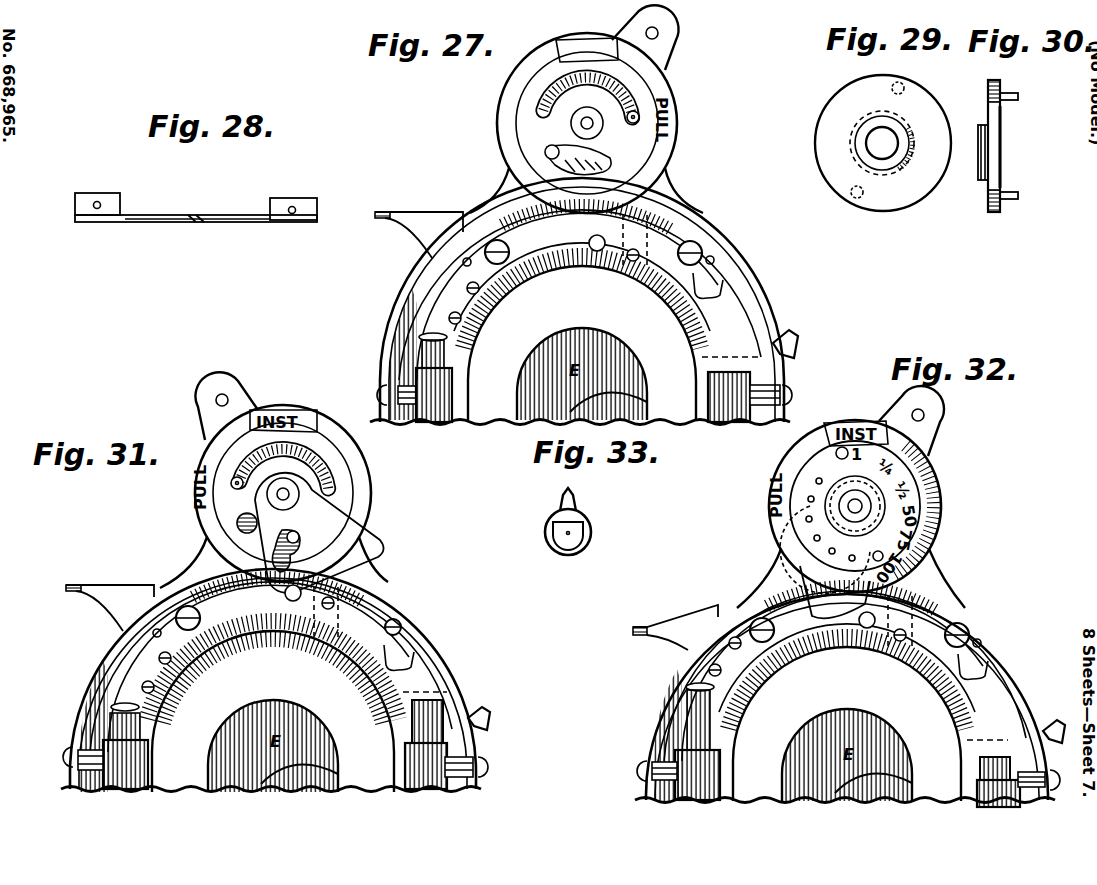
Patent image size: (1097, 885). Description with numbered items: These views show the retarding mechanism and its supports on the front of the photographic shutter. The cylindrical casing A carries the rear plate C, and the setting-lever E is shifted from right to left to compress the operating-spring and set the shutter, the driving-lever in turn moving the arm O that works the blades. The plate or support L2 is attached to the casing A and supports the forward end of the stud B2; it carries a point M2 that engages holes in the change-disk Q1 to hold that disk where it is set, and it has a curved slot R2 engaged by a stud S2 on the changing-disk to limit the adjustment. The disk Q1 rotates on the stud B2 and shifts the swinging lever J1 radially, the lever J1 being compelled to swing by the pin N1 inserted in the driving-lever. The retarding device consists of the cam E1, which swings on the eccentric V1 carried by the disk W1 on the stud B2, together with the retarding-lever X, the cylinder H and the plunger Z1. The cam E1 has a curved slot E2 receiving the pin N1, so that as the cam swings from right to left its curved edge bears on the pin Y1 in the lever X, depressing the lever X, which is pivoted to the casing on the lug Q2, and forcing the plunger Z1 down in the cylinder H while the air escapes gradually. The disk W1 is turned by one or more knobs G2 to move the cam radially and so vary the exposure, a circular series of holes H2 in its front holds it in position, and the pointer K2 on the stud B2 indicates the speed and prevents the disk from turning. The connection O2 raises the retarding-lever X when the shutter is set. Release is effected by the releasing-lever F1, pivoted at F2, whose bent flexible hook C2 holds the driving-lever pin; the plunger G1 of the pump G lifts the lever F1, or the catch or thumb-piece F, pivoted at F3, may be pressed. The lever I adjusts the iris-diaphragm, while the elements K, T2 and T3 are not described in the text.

In FIG. 27, the setting-lever E is at (673, 30).
In FIG. 31, the setting-lever E is at (208, 396).
In FIG. 32, the setting-lever E is at (945, 418).
In FIG. 27, the point M2 is at (557, 43).
In FIG. 28, the point M2 is at (195, 215).
In FIG. 27, the curved slot R2 is at (544, 93).
In FIG. 31, the curved slot R2 is at (240, 467).
In FIG. 27, the stud B2 is at (571, 124).
In FIG. 31, the stud B2 is at (270, 497).
In FIG. 32, the stud B2 is at (840, 500).
In FIG. 27, the disk Q1 is at (670, 117).
In FIG. 31, the disk Q1 is at (353, 443).
In FIG. 32, the disk Q1 is at (941, 486).
In FIG. 27, the stud S2 is at (631, 129).
In FIG. 31, the stud S2 is at (230, 482).
In FIG. 27, the pin N1 is at (548, 152).
In FIG. 31, the pin N1 is at (238, 528).
In FIG. 27, the plate or support L2 is at (586, 190).
In FIG. 28, the plate or support L2 is at (196, 199).
In FIG. 31, the plate or support L2 is at (343, 458).
In FIG. 32, the plate or support L2 is at (945, 575).
In FIG. 27, the catch or thumb-piece F is at (419, 222).
In FIG. 31, the catch or thumb-piece F is at (110, 596).
In FIG. 32, the catch or thumb-piece F is at (675, 621).
In FIG. 27, the lug Q2 is at (468, 197).
In FIG. 31, the lug Q2 is at (137, 556).
In FIG. 32, the lug Q2 is at (740, 600).
In FIG. 27, the bent flexible hook C2 is at (549, 197).
In FIG. 31, the bent flexible hook C2 is at (199, 573).
In FIG. 27, the connection O2 is at (704, 199).
In FIG. 31, the connection O2 is at (397, 567).
In FIG. 32, the connection O2 is at (885, 689).
In FIG. 27, the releasing-lever F1 is at (729, 222).
In FIG. 31, the releasing-lever F1 is at (112, 647).
In FIG. 32, the releasing-lever F1 is at (984, 595).
In FIG. 27, the pivot F2 is at (733, 250).
In FIG. 32, the pivot F2 is at (994, 628).
In FIG. 27, the pivot F3 is at (427, 259).
In FIG. 31, the pivot F3 is at (139, 614).
In FIG. 27, the cylindrical casing A is at (582, 300).
In FIG. 31, the cylindrical casing A is at (273, 679).
In FIG. 32, the cylindrical casing A is at (847, 697).
In FIG. 27, the hatched rim band K is at (391, 299).
In FIG. 31, the hatched rim band K is at (75, 677).
In FIG. 32, the hatched rim band K is at (1023, 667).
In FIG. 27, the screw T2 is at (503, 304).
In FIG. 31, the screw T2 is at (197, 674).
In FIG. 32, the screw T2 is at (772, 670).
In FIG. 27, the screw T3 is at (481, 332).
In FIG. 31, the screw T3 is at (176, 702).
In FIG. 32, the screw T3 is at (748, 695).
In FIG. 27, the retarding-lever X is at (706, 324).
In FIG. 31, the retarding-lever X is at (406, 664).
In FIG. 32, the retarding-lever X is at (973, 711).
In FIG. 27, the plunger Z1 is at (782, 325).
In FIG. 31, the plunger Z1 is at (476, 692).
In FIG. 32, the plunger Z1 is at (1044, 703).
In FIG. 27, the lever I is at (793, 337).
In FIG. 31, the lever I is at (492, 712).
In FIG. 32, the lever I is at (1057, 722).
In FIG. 27, the plunger G1 is at (399, 377).
In FIG. 31, the plunger G1 is at (89, 746).
In FIG. 32, the plunger G1 is at (666, 741).
In FIG. 31, the pump G is at (76, 764).
In FIG. 32, the pump G is at (648, 776).
In FIG. 27, the arm O is at (576, 263).
In FIG. 31, the arm O is at (297, 634).
In FIG. 32, the arm O is at (787, 659).
In FIG. 27, the lever J1 is at (579, 240).
In FIG. 29, the disk W1 is at (823, 127).
In FIG. 30, the disk W1 is at (1003, 112).
In FIG. 32, the disk W1 is at (936, 466).
In FIG. 29, the eccentric V1 is at (855, 160).
In FIG. 30, the eccentric V1 is at (978, 160).
In FIG. 31, the eccentric V1 is at (307, 503).
In FIG. 32, the eccentric V1 is at (893, 524).
In FIG. 29, the knobs G2 is at (902, 88).
In FIG. 30, the knobs G2 is at (1015, 95).
In FIG. 32, the knobs G2 is at (834, 430).
In FIG. 31, the cam E1 is at (326, 544).
In FIG. 32, the cam E1 is at (850, 574).
In FIG. 31, the curved slot E2 is at (277, 555).
In FIG. 32, the curved slot E2 is at (818, 535).
In FIG. 31, the pin Y1 is at (272, 596).
In FIG. 32, the pin Y1 is at (841, 634).
In FIG. 31, the cylinder H is at (464, 744).
In FIG. 32, the cylinder H is at (996, 782).
In FIG. 32, the holes or notches H2 is at (806, 499).
In FIG. 32, the rear plate C is at (640, 727).
In FIG. 33, the pointer K2 is at (588, 516).